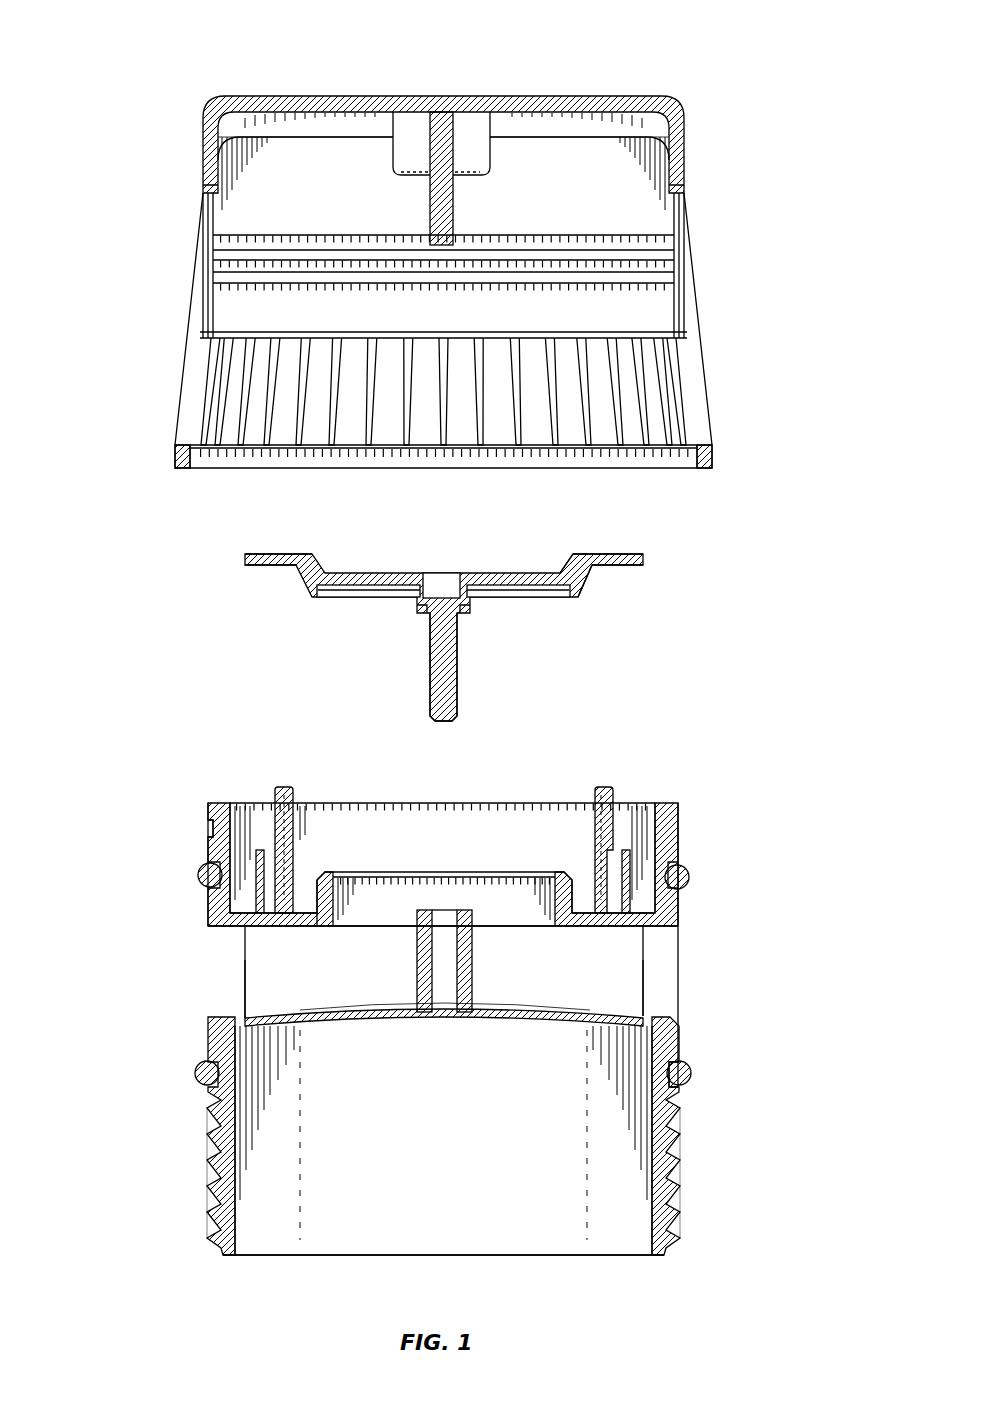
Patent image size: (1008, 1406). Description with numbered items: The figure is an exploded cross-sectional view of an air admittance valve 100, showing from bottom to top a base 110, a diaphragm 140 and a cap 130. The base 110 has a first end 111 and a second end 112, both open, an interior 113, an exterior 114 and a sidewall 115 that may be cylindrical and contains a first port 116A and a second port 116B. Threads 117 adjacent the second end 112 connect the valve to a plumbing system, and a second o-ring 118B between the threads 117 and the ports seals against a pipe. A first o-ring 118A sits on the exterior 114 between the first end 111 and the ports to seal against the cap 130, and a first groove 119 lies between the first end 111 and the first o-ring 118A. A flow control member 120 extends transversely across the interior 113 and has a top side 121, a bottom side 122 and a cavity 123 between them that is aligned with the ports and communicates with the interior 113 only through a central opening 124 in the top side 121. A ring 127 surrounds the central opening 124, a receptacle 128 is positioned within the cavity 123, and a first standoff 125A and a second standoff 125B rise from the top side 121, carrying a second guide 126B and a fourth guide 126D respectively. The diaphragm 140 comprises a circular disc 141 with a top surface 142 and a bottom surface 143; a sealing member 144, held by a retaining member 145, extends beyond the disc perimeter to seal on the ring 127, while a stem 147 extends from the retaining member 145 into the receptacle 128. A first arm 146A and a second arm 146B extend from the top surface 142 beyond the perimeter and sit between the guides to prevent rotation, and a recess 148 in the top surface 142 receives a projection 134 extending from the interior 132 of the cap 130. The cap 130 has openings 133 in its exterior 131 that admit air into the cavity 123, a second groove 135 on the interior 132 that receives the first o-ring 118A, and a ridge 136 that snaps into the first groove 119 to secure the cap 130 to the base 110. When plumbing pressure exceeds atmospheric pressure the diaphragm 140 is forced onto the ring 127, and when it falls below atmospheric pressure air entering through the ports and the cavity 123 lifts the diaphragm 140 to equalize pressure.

The air admittance valve 100 is at (138, 30).
The base 110 is at (178, 742).
The first end 111 is at (222, 802).
The second end 112 is at (228, 1258).
The interior 113 is at (470, 1202).
The exterior 114 is at (208, 850).
The sidewall 115 is at (680, 905).
The first port 116A is at (214, 986).
The second port 116B is at (662, 972).
The threads 117 is at (208, 1182).
The first o-ring 118A is at (200, 876).
The second o-ring 118B is at (200, 1076).
The first groove 119 is at (212, 826).
The flow control member 120 is at (275, 914).
The top side 121 is at (292, 910).
The bottom side 122 is at (545, 1026).
The cavity 123 is at (580, 983).
The central opening 124 is at (403, 872).
The first standoff 125A is at (268, 830).
The second standoff 125B is at (622, 850).
The second guide 126B is at (286, 792).
The fourth guide 126D is at (606, 792).
The ring 127 is at (562, 874).
The receptacle 128 is at (418, 952).
The cap 130 is at (205, 118).
The exterior 131 is at (183, 358).
The interior 132 is at (345, 194).
The openings 133 is at (665, 410).
The projection 134 is at (452, 218).
The second groove 135 is at (215, 272).
The ridge 136 is at (655, 242).
The diaphragm 140 is at (212, 570).
The circular disc 141 is at (355, 578).
The top surface 142 is at (528, 574).
The bottom surface 143 is at (548, 598).
The sealing member 144 is at (350, 598).
The retaining member 145 is at (468, 615).
The first arm 146A is at (262, 553).
The second arm 146B is at (630, 553).
The stem 147 is at (432, 666).
The recess 148 is at (443, 582).